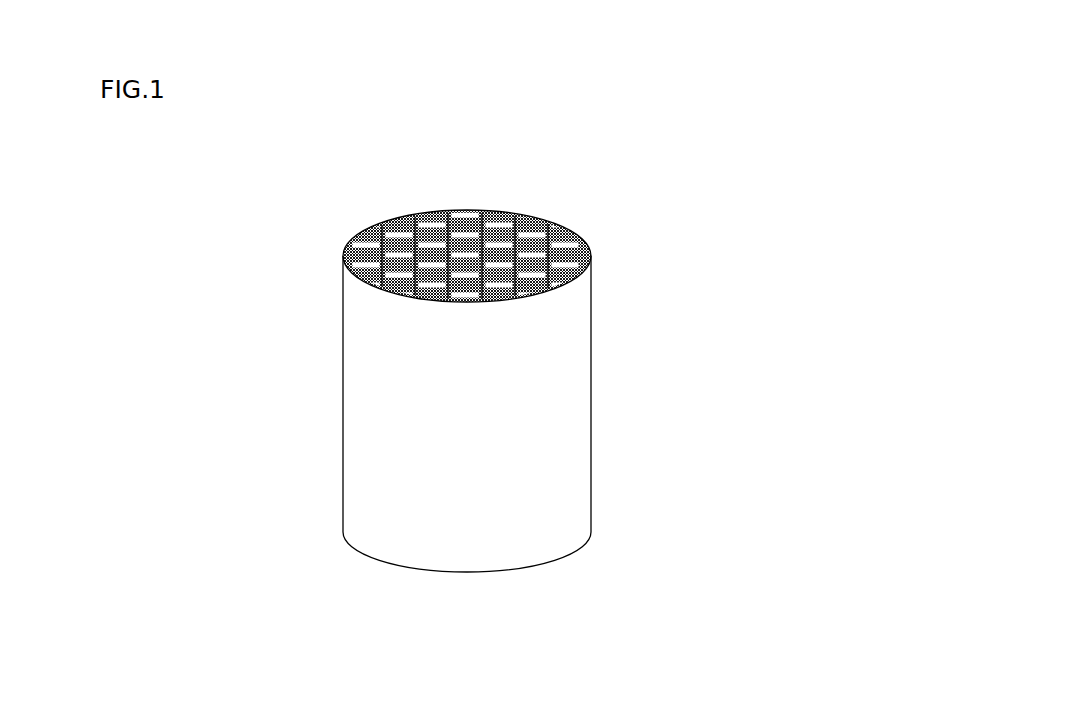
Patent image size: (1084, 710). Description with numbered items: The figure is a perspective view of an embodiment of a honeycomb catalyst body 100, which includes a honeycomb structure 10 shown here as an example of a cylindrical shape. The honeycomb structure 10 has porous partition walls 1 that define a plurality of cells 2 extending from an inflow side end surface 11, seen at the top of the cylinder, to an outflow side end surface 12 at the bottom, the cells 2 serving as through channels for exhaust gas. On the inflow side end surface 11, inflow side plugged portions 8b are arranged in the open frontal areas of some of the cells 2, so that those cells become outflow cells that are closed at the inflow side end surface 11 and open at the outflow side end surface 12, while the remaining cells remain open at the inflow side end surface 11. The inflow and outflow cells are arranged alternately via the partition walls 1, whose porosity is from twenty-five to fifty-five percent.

The honeycomb catalyst body 100 is at (797, 130).
The partition walls 1 is at (451, 233).
The cells 2 is at (583, 240).
The inflow side plugged portions 8b is at (387, 222).
The honeycomb structure 10 is at (594, 435).
The inflow side end surface 11 is at (451, 237).
The outflow side end surface 12 is at (585, 548).